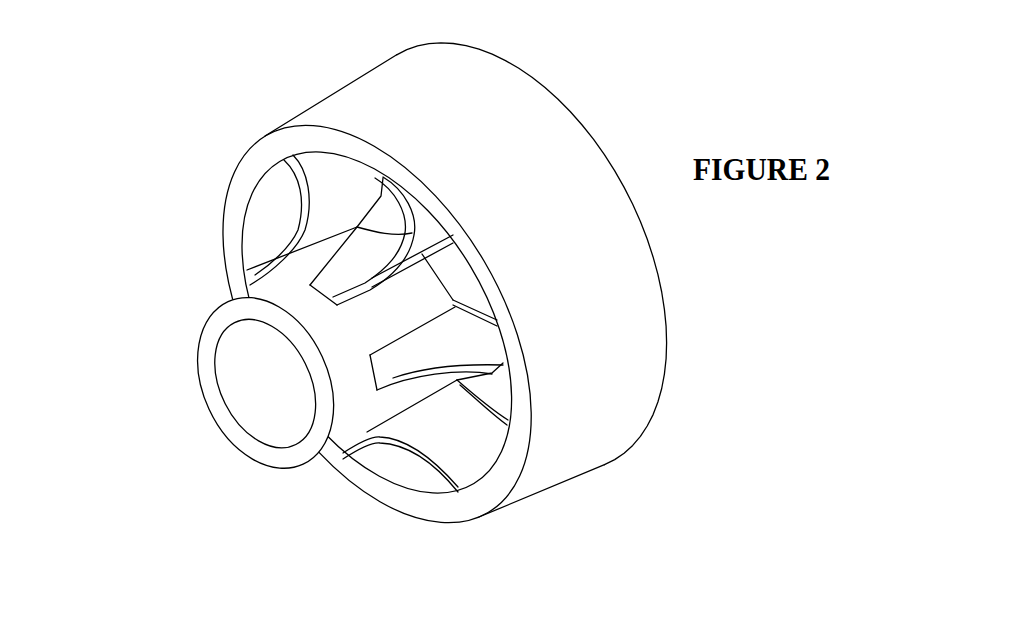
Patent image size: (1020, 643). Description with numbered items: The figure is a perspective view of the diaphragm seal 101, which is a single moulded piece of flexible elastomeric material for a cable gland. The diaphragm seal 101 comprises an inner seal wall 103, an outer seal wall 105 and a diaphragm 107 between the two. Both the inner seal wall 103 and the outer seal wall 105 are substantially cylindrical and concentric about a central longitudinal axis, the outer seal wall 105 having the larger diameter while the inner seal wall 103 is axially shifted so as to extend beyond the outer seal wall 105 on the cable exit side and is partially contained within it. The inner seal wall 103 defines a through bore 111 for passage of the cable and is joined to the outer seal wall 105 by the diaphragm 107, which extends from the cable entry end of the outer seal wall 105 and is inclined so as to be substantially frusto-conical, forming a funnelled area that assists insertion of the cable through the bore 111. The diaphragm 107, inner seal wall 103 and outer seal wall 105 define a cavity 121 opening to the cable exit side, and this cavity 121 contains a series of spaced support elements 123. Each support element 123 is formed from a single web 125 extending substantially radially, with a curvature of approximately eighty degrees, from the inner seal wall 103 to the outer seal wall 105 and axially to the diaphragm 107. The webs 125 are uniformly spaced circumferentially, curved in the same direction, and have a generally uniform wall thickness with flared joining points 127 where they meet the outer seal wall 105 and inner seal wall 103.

The diaphragm seal 101 is at (593, 118).
The inner seal wall 103 is at (283, 462).
The outer seal wall 105 is at (625, 405).
The diaphragm 107 is at (460, 278).
The through bore 111 is at (255, 398).
The cavity 121 is at (410, 470).
The support element 123 is at (472, 453).
The web 125 is at (306, 213).
The flared joining point 127 is at (310, 286).